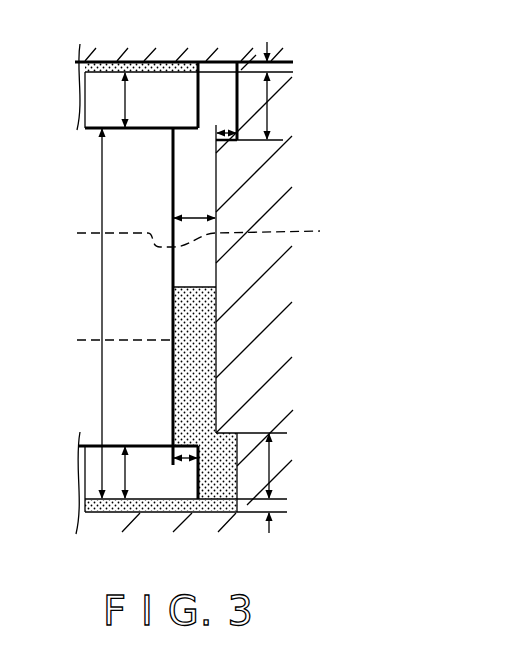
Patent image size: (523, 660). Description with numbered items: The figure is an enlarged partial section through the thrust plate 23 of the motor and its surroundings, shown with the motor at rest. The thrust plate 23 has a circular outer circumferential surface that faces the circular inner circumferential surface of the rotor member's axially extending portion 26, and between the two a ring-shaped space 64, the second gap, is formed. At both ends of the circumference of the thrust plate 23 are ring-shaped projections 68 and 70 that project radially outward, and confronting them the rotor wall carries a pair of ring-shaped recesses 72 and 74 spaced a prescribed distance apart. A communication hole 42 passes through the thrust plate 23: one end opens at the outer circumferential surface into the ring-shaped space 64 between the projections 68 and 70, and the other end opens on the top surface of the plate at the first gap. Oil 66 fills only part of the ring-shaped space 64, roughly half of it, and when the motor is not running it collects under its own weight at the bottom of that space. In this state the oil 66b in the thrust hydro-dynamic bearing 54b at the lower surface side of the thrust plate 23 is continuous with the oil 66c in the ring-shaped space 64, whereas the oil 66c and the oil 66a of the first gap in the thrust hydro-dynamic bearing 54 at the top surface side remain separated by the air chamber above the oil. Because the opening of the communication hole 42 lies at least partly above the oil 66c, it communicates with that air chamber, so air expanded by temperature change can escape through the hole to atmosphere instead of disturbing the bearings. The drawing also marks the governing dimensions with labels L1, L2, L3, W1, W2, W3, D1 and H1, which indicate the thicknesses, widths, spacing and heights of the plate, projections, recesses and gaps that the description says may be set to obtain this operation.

The upper flange portion 54 is at (107, 57).
The oil of the first gap 66a is at (147, 66).
The ring-shaped projection 68 is at (183, 78).
The ring-shaped recess 72 is at (236, 90).
The thrust plate 23 is at (178, 168).
The communication hole 42 is at (320, 231).
The ring-shaped space 64 is at (203, 268).
The assembly 26 is at (362, 318).
The oil 66 is at (207, 390).
The oil of the second gap in the ring-shaped space 66c is at (213, 353).
The thrust hydro-dynamic bearing 54b is at (104, 516).
The oil of the second gap in the lower bearing 66b is at (160, 513).
The ring-shaped projection 70 is at (190, 492).
The ring-shaped recess 74 is at (234, 479).
The upper plate thickness L1 is at (293, 62).
The lower plate thickness L2 is at (280, 498).
The flange spacing L3 is at (86, 313).
The flange width W1 is at (129, 465).
The projection height W2 is at (272, 113).
The gap width W3 is at (195, 202).
The projection offset D1 is at (228, 132).
The flange overlap H1 is at (188, 457).